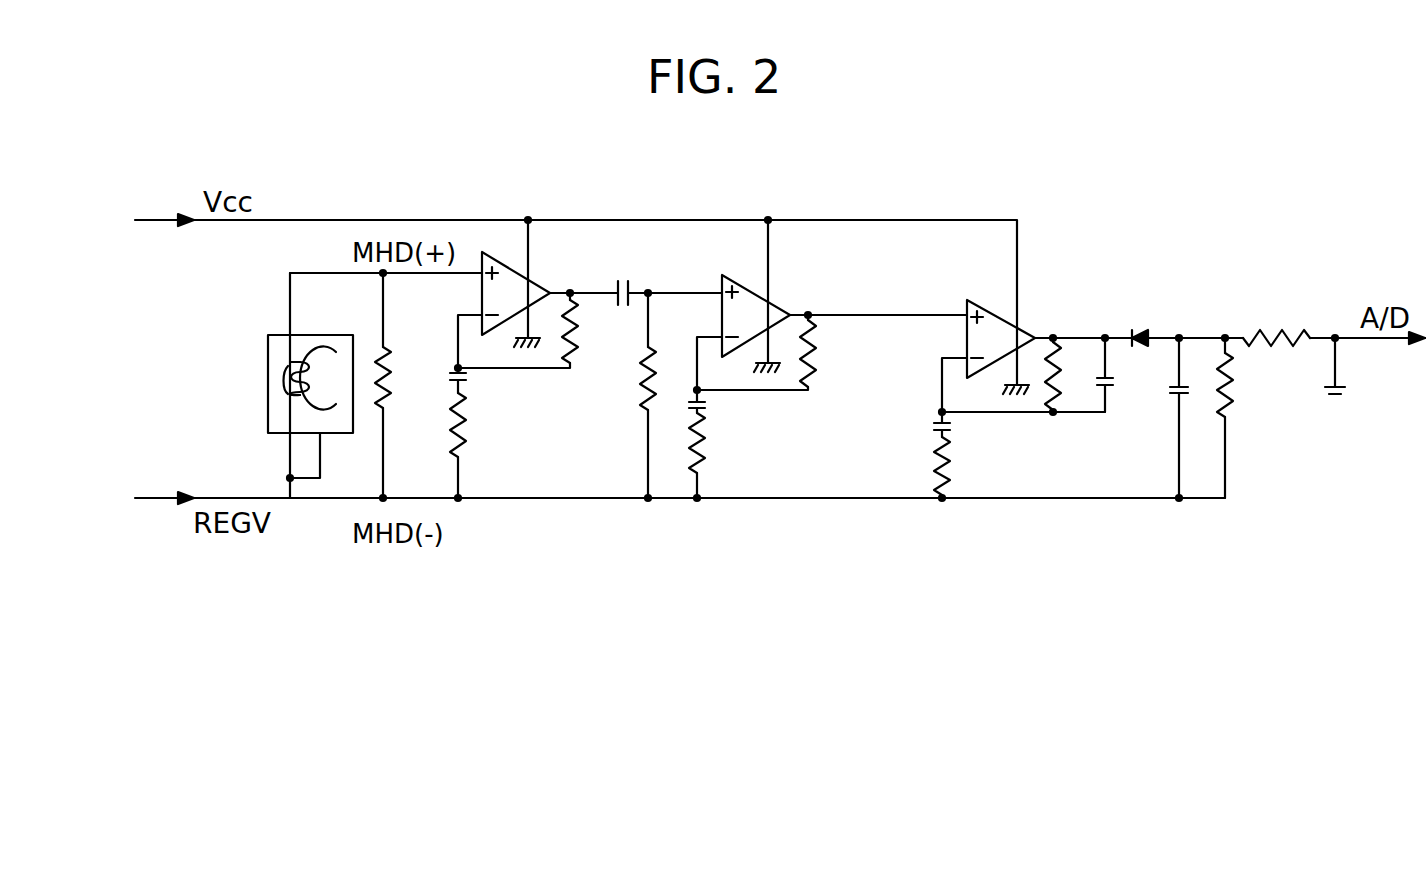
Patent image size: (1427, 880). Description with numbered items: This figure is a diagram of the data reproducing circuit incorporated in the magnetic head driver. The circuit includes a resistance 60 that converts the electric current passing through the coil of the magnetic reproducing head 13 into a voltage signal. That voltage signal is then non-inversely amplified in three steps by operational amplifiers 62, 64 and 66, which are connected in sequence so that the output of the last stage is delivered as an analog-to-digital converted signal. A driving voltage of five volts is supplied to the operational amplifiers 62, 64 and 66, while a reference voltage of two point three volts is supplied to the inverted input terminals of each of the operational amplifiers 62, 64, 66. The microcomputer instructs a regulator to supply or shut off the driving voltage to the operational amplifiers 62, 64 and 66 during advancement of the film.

The magnetic reproducing head 13 is at (275, 335).
The resistance 60 is at (393, 392).
The operational amplifier 62 is at (536, 280).
The operational amplifier 64 is at (722, 276).
The operational amplifier 66 is at (967, 300).